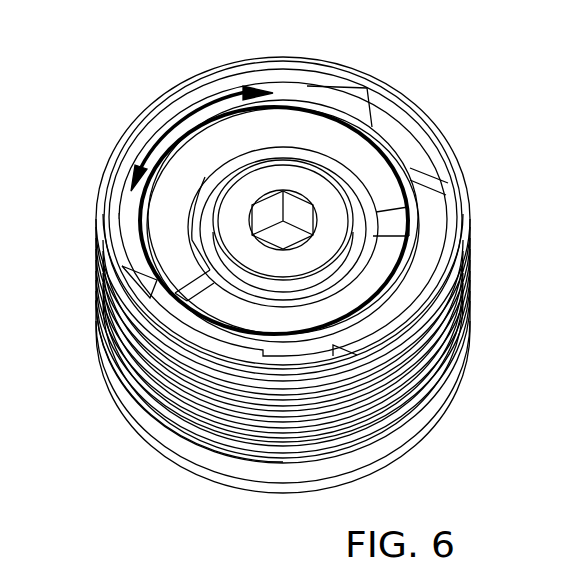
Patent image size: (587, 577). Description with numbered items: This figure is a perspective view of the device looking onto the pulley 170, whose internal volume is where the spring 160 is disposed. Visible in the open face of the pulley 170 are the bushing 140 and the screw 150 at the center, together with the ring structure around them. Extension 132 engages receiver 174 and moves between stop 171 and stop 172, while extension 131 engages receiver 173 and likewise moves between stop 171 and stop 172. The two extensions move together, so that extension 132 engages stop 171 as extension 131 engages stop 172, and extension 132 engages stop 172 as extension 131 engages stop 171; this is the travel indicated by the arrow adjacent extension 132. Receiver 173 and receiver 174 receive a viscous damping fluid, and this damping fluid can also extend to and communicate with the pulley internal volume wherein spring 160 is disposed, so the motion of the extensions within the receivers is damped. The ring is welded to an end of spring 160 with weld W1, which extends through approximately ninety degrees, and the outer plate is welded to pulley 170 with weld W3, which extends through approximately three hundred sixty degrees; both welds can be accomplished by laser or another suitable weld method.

The extension 131 is at (385, 322).
The extension 132 is at (182, 105).
The bushing 140 is at (213, 217).
The screw 150 is at (318, 197).
The spring 160 is at (400, 238).
The pulley 170 is at (440, 386).
The stop 171 is at (410, 135).
The stop 172 is at (157, 305).
The receiver 173 is at (437, 215).
The receiver 174 is at (313, 90).
The weld W1 is at (150, 262).
The weld W3 is at (393, 97).